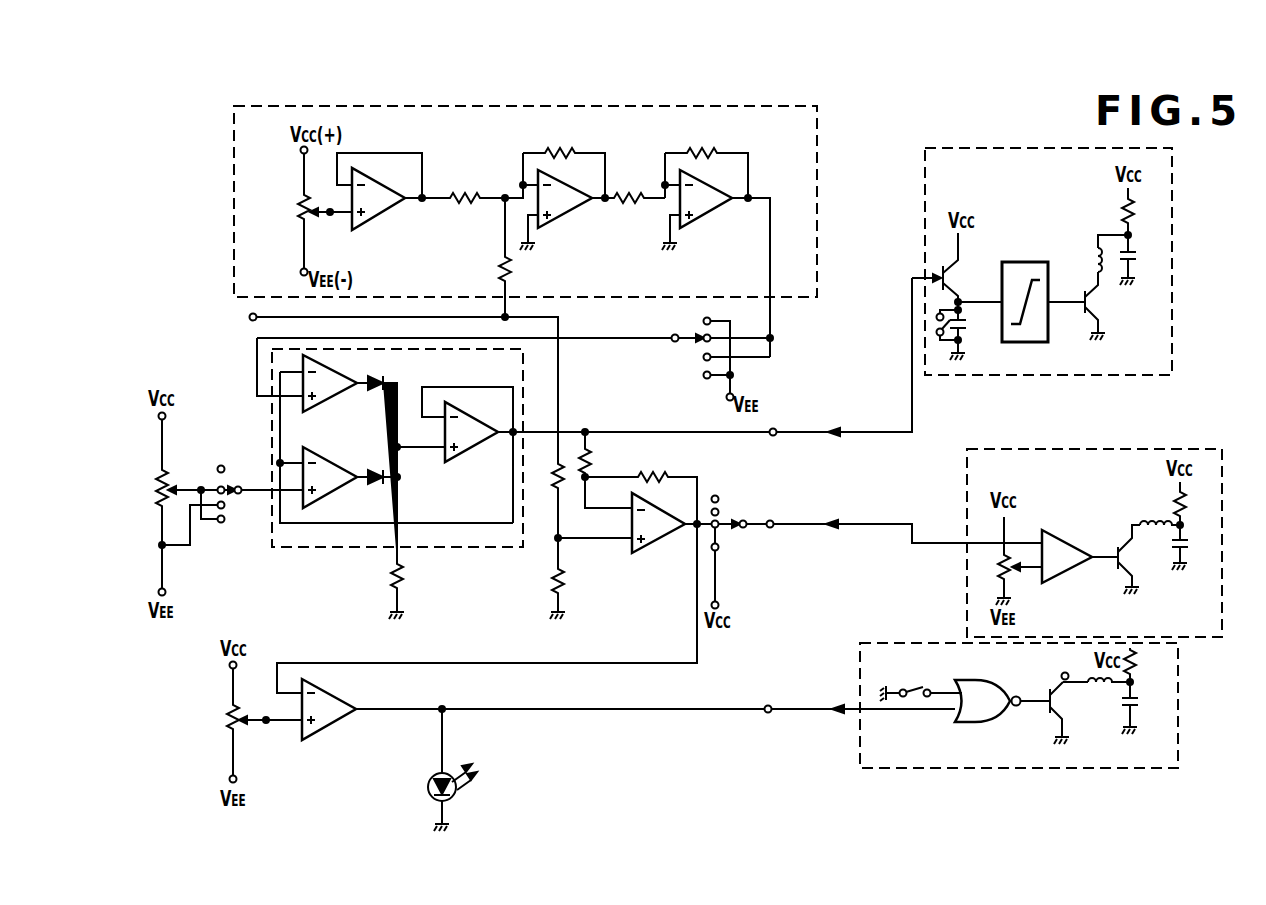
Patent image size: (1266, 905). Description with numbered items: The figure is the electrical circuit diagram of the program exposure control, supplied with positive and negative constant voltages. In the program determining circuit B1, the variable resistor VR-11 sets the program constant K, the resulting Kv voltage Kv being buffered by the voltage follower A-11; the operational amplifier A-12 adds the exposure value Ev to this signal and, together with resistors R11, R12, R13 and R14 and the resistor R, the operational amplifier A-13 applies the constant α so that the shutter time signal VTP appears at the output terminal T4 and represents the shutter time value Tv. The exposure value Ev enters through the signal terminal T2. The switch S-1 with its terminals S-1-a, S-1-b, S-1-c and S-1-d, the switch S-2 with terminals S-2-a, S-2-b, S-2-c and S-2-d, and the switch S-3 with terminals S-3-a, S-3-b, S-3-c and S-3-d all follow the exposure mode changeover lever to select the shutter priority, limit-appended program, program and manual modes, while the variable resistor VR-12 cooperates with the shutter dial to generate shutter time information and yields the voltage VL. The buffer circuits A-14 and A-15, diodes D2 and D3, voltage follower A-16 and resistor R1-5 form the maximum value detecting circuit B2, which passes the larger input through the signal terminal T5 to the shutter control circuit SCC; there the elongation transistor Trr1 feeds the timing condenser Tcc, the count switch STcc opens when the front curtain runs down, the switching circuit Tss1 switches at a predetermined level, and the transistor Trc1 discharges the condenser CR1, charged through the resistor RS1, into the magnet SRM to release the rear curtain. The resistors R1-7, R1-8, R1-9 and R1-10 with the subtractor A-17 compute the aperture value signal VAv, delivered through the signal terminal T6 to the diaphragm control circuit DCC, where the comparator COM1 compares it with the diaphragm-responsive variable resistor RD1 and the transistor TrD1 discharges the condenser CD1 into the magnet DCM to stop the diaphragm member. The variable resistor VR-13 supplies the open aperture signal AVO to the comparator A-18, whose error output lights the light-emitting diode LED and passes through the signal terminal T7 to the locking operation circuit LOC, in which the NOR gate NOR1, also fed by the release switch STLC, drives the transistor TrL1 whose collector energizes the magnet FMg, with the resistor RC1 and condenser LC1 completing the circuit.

The program determining circuit B1 is at (234, 130).
The variable resistor VR-11 is at (297, 211).
The Kv-voltage Kv is at (331, 216).
The voltage follower A-11 is at (380, 212).
The resistor R11 is at (468, 193).
The resistor R12 is at (563, 149).
The resistor R13 is at (487, 259).
The resistor R14 is at (636, 193).
The operational amplifier A-12 is at (566, 212).
The resistor R is at (706, 156).
The operational amplifier A-13 is at (706, 212).
The electrical signal VTP is at (763, 178).
The output terminal T4 is at (750, 200).
The signal terminal T2 is at (372, 383).
The switch S-1 is at (672, 336).
The a terminal of switch S1 S-1-a is at (711, 318).
The b terminal of switch S1 S-1-b is at (711, 334).
The c terminal of switch S1 S-1-c is at (702, 356).
The d terminal of switch S1 S-1-d is at (702, 375).
The maximum value detecting circuit B2 is at (500, 548).
The buffer circuit A-14 is at (331, 398).
The buffer circuit A-15 is at (331, 492).
The voltage follower A-16 is at (466, 444).
The diode D2 is at (370, 378).
The diode D3 is at (372, 470).
The resistor R1-5 is at (402, 578).
The variable resistor VR-12 is at (156, 490).
The switch S-3 is at (240, 486).
The a terminal of switch S3 S-3-a is at (222, 464).
The b terminal of switch S3 S-3-b is at (214, 486).
The c terminal of switch S3 S-3-c is at (216, 522).
The d terminal of switch S3 S-3-d is at (224, 523).
The voltage VL is at (262, 492).
The resistor R1-9 is at (565, 468).
The resistor R1-10 is at (563, 582).
The shutter time value Tv is at (676, 420).
The signal terminal T5 is at (785, 424).
The resistor R1-7 is at (589, 458).
The resistor R1-8 is at (651, 474).
The subtractor A-17 is at (652, 538).
The switch S-2 is at (746, 518).
The a terminal of switch S2 S-2-a is at (717, 495).
The b terminal of switch S2 S-2-b is at (718, 509).
The c terminal of switch S2 S-2-c is at (718, 528).
The d terminal of switch S2 S-2-d is at (718, 550).
The signal terminal T6 is at (773, 528).
The aperture value signal VAv is at (839, 506).
The variable resistor VR-13 is at (225, 720).
The maximum possible aperture value signal AVO is at (267, 724).
The cooperation detecting circuit A-18 is at (328, 722).
The light-emitting diode LED is at (454, 796).
The signal terminal T7 is at (769, 713).
The shutter control circuit SCC is at (1022, 147).
The elongation transistor Trr1 is at (957, 271).
The timing condenser Tcc is at (967, 326).
The count switch STcc is at (938, 336).
The switching circuit Tss1 is at (1044, 330).
The transistor Trc1 is at (1096, 300).
The magnet SRM is at (1093, 253).
The resistor RS1 is at (1143, 213).
The condenser CR1 is at (1143, 260).
The diaphragm control circuit DCC is at (1082, 449).
The comparator COM1 is at (1058, 545).
The variable resistor RD1 is at (996, 566).
The magnet DCM is at (1156, 522).
The condenser CD1 is at (1196, 547).
The transistor TrD1 is at (1130, 565).
The locking operation circuit LOC is at (940, 770).
The switch STLC is at (921, 678).
The NOR gate NOR1 is at (980, 725).
The magnet FMg is at (1070, 662).
The transistor TrL1 is at (1064, 710).
The resistor RC1 is at (1127, 666).
The condenser LC1 is at (1146, 708).